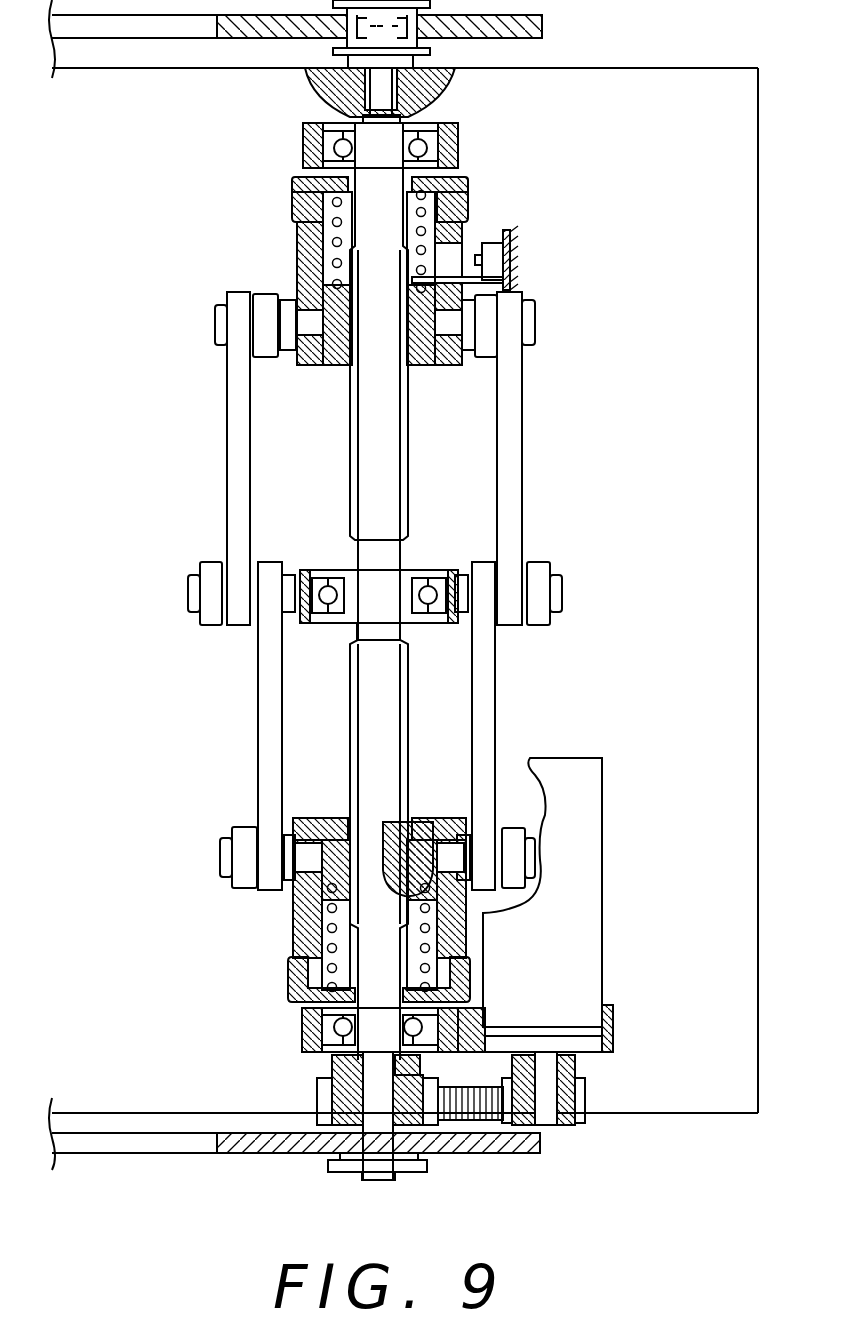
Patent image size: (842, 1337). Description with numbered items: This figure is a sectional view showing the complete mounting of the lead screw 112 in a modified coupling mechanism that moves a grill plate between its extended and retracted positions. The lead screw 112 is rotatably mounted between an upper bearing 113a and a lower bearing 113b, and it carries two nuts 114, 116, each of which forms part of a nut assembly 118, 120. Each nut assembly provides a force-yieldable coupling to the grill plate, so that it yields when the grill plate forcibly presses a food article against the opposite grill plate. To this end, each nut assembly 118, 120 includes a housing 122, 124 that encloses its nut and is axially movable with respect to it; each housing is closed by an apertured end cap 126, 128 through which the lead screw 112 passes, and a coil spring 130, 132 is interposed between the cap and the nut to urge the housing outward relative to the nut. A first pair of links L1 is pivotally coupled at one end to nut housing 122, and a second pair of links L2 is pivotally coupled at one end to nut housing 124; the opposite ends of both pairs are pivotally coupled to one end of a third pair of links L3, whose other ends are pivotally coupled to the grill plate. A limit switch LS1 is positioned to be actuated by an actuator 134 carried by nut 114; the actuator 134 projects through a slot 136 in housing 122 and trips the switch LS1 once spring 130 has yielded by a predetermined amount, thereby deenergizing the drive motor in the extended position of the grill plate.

The lead screw 112 is at (385, 503).
The bearing 113a is at (462, 152).
The bearing 113b is at (302, 1028).
The nut 114 is at (333, 365).
The nut 116 is at (330, 832).
The nut assembly 118 is at (407, 299).
The nut assembly 120 is at (412, 890).
The housing 122 is at (463, 233).
The housing 124 is at (450, 913).
The apertured end cap 126 is at (467, 184).
The apertured end cap 128 is at (467, 975).
The coil spring 130 is at (296, 212).
The coil spring 132 is at (297, 942).
The actuator 134 is at (445, 340).
The slot 136 is at (448, 268).
The limit switch LS1 is at (495, 258).
The first pair of links L1 is at (570, 450).
The second pair of links L2 is at (545, 700).
The third pair of links L3 is at (590, 551).